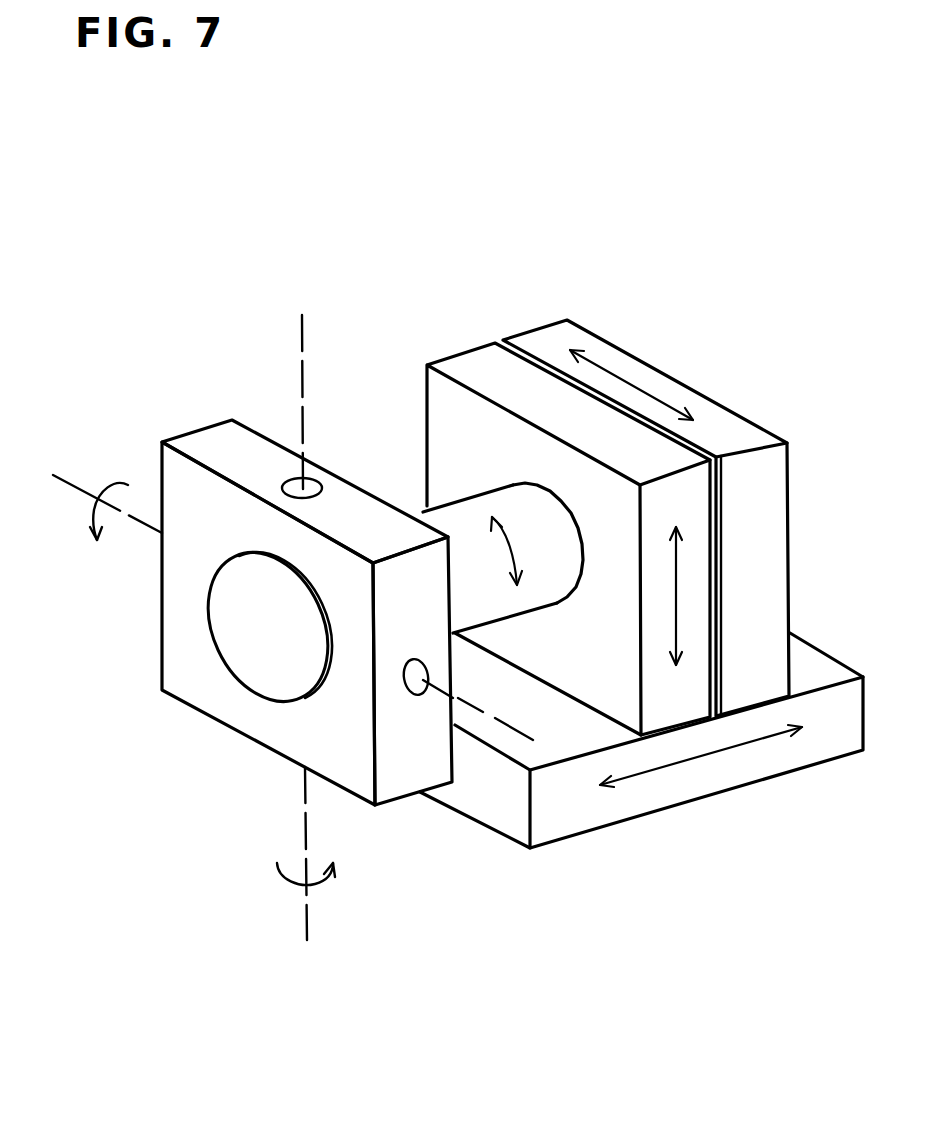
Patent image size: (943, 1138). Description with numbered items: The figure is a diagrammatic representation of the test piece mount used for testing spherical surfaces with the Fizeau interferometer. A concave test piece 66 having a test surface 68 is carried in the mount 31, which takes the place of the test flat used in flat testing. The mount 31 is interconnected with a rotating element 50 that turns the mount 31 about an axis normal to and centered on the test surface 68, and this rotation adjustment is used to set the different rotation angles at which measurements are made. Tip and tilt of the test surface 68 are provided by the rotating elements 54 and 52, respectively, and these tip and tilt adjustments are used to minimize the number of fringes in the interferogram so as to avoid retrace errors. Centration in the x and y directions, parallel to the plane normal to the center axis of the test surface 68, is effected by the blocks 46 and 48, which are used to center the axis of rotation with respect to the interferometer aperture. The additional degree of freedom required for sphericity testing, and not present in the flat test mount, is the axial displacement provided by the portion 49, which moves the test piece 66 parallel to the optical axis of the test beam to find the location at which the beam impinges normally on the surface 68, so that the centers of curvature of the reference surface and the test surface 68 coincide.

The mount 31 is at (222, 418).
The centration block 46 is at (535, 327).
The centration block 48 is at (461, 349).
The axial displacement portion 49 is at (722, 778).
The rotating element 50 is at (427, 500).
The tilt rotating element 52 is at (307, 925).
The tip rotating element 54 is at (72, 482).
The test piece 66 is at (305, 700).
The test surface 68 is at (265, 640).